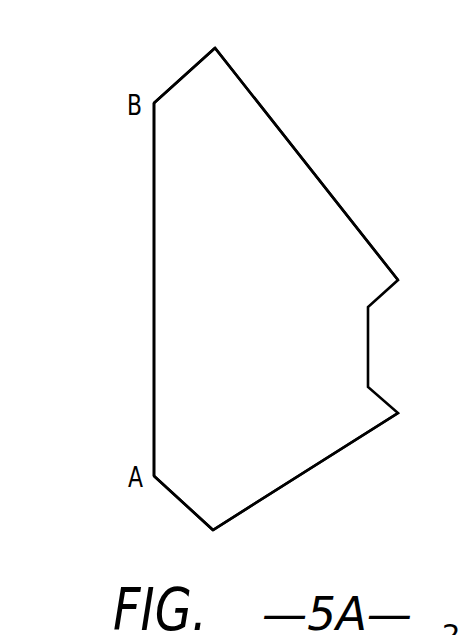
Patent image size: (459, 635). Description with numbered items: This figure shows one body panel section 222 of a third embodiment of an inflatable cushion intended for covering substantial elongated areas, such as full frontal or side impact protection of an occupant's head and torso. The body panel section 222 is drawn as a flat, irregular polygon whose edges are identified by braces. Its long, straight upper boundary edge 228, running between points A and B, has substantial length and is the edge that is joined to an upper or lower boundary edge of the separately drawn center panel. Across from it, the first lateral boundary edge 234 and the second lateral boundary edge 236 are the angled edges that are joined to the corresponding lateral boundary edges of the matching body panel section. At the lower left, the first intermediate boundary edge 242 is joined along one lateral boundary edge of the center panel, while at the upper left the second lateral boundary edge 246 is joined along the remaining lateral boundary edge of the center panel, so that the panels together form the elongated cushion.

The body panel section 222 is at (282, 315).
The upper boundary edge 228 is at (111, 103).
The first lateral boundary edge 234 is at (413, 436).
The second lateral boundary edge 236 is at (236, 30).
The first intermediate boundary edge 242 is at (196, 555).
The second lateral boundary edge 246 is at (196, 25).